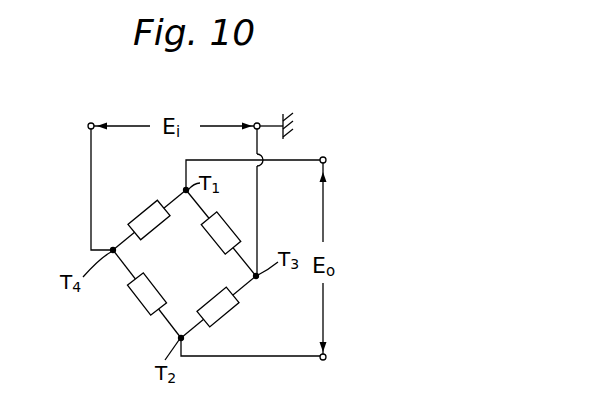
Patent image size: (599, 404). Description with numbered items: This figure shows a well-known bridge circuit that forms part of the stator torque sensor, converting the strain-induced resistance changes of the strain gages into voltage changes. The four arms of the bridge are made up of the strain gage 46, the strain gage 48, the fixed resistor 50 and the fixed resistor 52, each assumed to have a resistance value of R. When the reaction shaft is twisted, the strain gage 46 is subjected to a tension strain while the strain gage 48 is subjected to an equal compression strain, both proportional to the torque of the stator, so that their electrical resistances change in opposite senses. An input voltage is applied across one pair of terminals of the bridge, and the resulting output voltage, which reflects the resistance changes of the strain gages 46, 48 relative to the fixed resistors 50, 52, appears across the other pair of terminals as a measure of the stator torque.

The strain gage 46 is at (144, 206).
The strain gage 48 is at (136, 306).
The fixed resistor 50 is at (235, 229).
The fixed resistor 52 is at (232, 313).